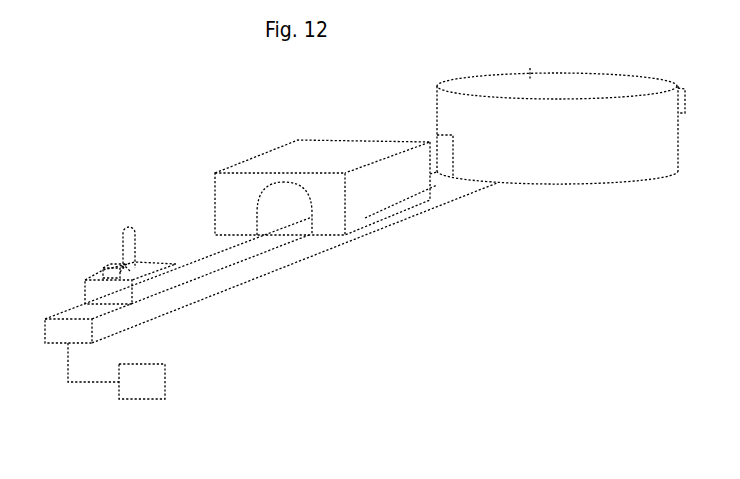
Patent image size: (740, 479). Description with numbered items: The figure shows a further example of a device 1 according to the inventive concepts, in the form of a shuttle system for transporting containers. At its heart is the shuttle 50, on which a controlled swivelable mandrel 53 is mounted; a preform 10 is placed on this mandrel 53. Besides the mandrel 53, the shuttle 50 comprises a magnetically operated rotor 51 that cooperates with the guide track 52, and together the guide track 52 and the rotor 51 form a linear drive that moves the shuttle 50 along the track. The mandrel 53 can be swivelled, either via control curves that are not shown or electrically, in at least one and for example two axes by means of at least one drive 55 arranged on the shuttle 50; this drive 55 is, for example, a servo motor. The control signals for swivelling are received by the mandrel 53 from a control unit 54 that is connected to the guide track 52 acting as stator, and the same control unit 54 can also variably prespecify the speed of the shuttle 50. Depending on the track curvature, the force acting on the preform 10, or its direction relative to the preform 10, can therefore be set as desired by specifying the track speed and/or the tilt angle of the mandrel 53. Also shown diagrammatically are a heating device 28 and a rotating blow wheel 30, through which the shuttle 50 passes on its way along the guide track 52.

The measuring device assembly 1 is at (303, 107).
The preform 10 is at (133, 228).
The heating device 28 is at (367, 215).
The rotating blow wheel 30 is at (530, 73).
The shuttle 50 is at (138, 214).
The magnetically operated rotor 51 is at (183, 300).
The guide track 52 is at (258, 268).
The controlled swivelable mandrel 53 is at (135, 285).
The control unit 54 is at (157, 387).
The drive 55 is at (100, 266).